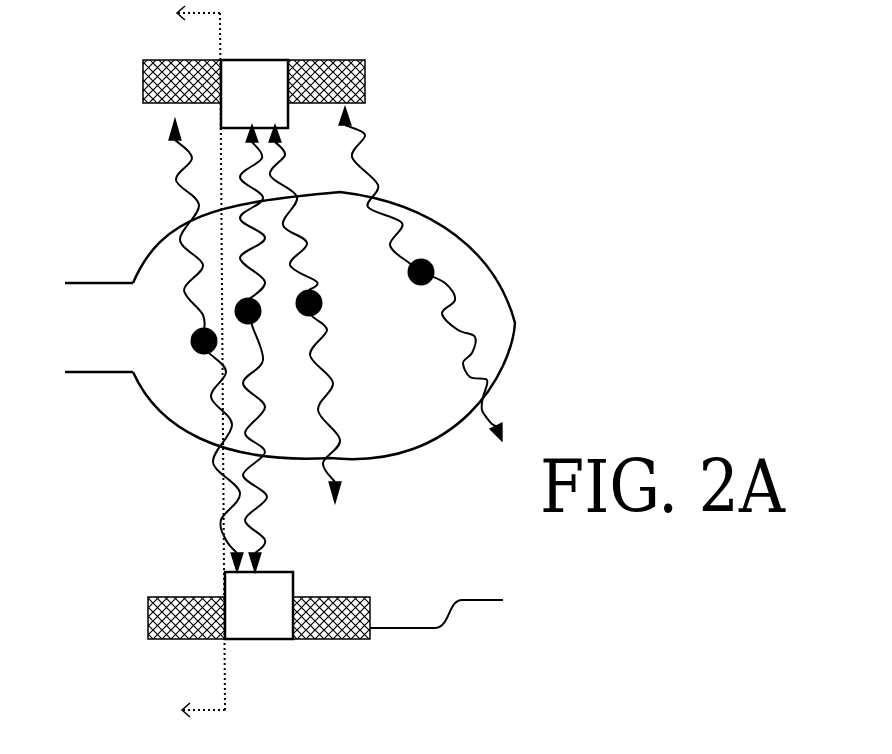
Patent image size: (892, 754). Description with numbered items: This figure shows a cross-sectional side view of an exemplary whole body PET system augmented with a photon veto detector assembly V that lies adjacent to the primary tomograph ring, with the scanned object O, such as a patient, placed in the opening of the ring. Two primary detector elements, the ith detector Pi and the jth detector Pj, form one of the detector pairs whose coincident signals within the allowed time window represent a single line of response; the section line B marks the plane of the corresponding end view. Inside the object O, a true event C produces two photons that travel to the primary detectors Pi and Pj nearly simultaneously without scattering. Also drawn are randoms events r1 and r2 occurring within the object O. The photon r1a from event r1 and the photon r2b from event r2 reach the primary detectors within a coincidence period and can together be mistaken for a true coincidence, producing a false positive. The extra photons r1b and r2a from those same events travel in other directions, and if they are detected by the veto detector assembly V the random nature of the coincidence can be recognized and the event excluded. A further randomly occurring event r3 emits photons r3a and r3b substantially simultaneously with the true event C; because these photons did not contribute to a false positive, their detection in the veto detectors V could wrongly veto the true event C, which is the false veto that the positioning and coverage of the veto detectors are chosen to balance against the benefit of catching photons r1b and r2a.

The object being imaged O is at (320, 325).
The true event C is at (262, 348).
The randoms event r1 is at (327, 316).
The randoms event r2 is at (191, 353).
The randomly occurring event r3 is at (407, 289).
The photon r1a is at (300, 207).
The extra photon r1b is at (350, 408).
The extra photon r2a is at (169, 224).
The photon r2b is at (256, 456).
The photon r3a is at (382, 189).
The photon r3b is at (489, 356).
The ith detector Pi is at (254, 94).
The jth detector Pj is at (259, 605).
The section line B- B is at (182, 368).
The photon veto detector assembly V is at (456, 610).